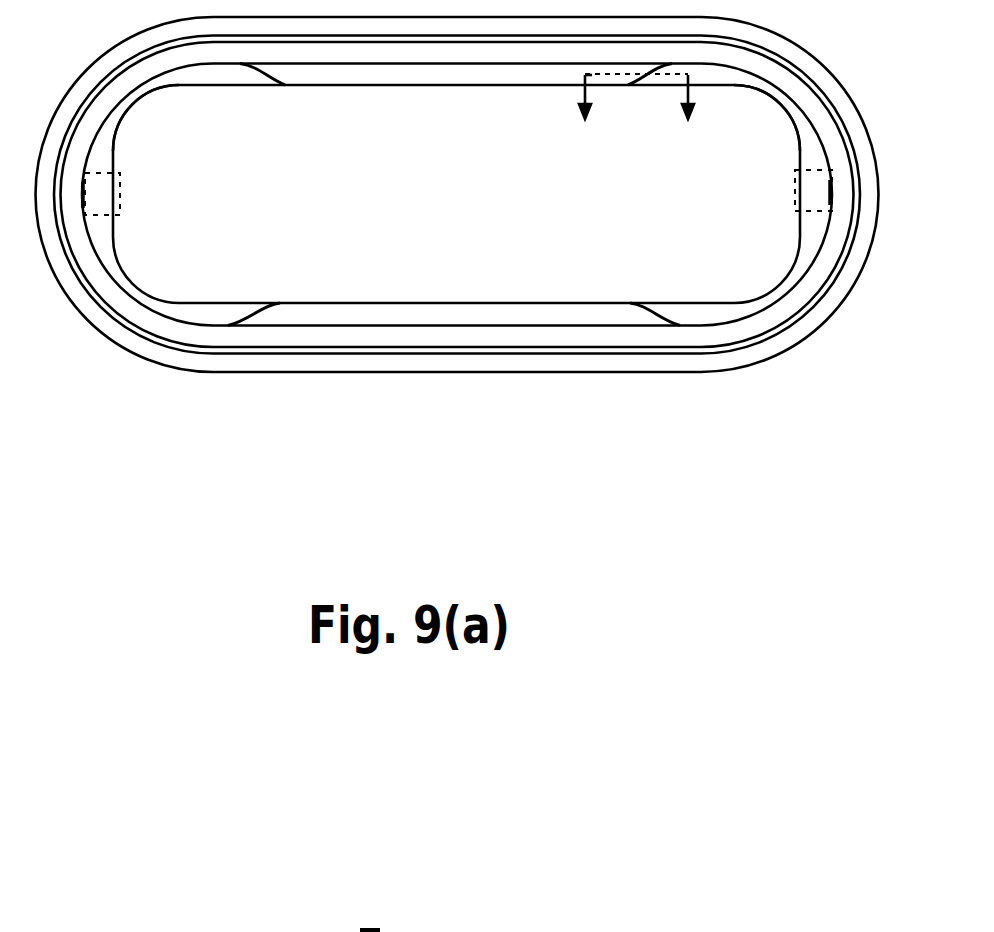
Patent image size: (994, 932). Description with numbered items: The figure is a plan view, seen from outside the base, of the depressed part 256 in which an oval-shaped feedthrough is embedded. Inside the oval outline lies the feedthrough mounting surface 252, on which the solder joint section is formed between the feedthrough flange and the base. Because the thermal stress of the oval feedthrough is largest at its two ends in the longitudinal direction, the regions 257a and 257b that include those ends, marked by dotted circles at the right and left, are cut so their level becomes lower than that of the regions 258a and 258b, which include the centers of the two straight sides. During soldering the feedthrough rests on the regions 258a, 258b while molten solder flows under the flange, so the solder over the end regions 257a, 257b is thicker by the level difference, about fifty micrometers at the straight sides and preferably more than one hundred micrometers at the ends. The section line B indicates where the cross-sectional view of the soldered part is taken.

The feedthrough mounting surface 252 is at (112, 237).
The depressed part 256 is at (424, 410).
The region including a longitudinal end of the feedthrough mounting surface 257a is at (800, 130).
The region including the other longitudinal end of the feedthrough mounting surface 257b is at (125, 120).
The region including the center of a straight line of the feedthrough mounting surfa 258a is at (428, 83).
The region including the center of the other straight line of the feedthrough mounti 258b is at (418, 310).
The B-B section line B is at (639, 118).